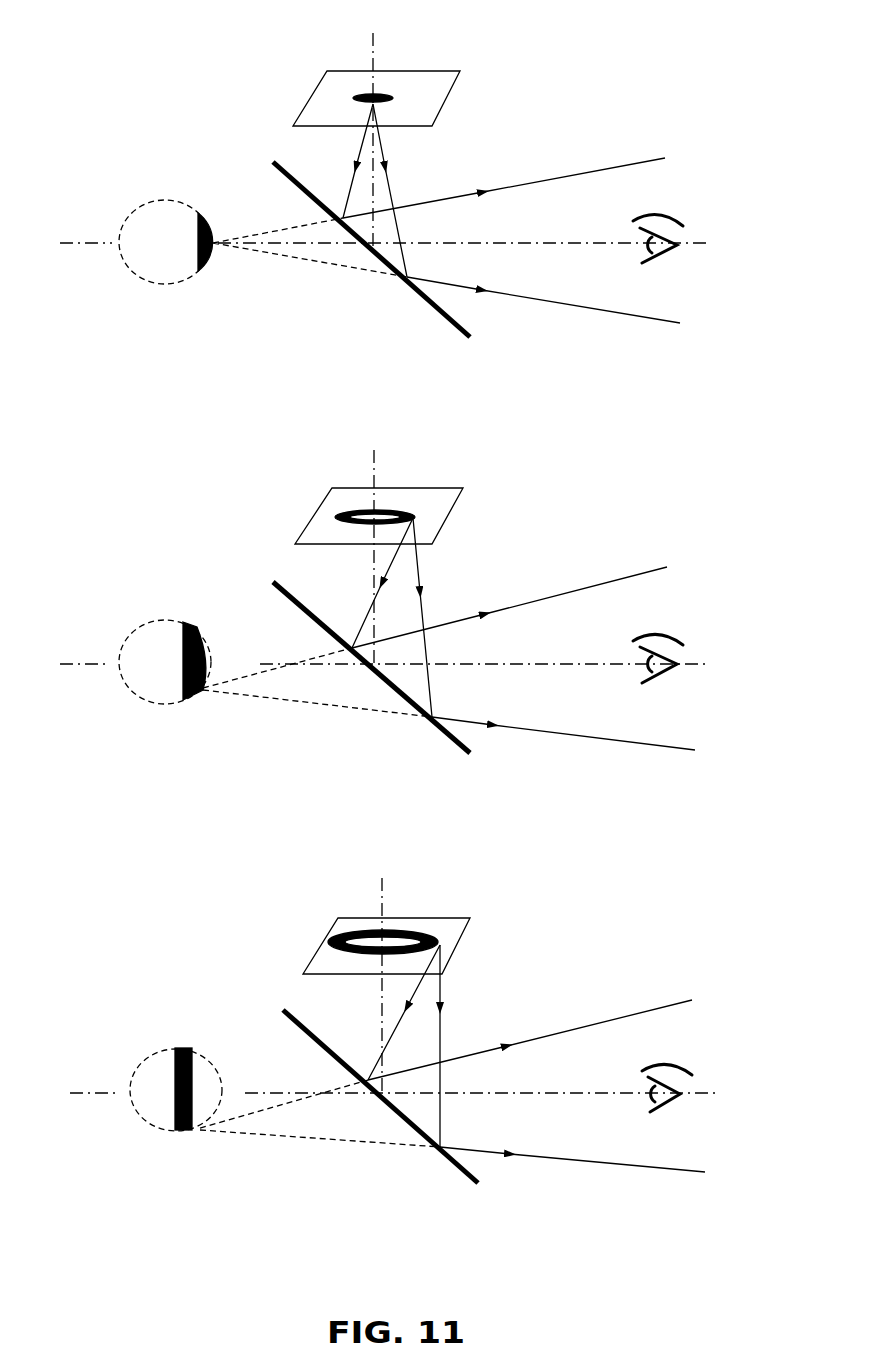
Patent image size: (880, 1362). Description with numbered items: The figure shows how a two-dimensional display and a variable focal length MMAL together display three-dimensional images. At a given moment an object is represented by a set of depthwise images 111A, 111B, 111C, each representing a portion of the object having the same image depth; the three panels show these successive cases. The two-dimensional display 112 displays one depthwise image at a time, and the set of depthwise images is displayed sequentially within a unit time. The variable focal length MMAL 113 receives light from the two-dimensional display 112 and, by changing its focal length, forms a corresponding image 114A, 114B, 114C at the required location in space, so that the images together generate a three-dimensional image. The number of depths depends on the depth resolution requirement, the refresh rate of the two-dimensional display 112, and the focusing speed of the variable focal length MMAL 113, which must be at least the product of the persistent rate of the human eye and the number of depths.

The depthwise image 111A is at (363, 90).
The depthwise image 111B is at (352, 510).
The depthwise image 111C is at (352, 935).
The two-dimensional display 112 is at (442, 67).
The variable focal length MMAL 113 is at (483, 340).
The image 114A is at (203, 213).
The image 114B is at (192, 615).
The image 114C is at (185, 1043).